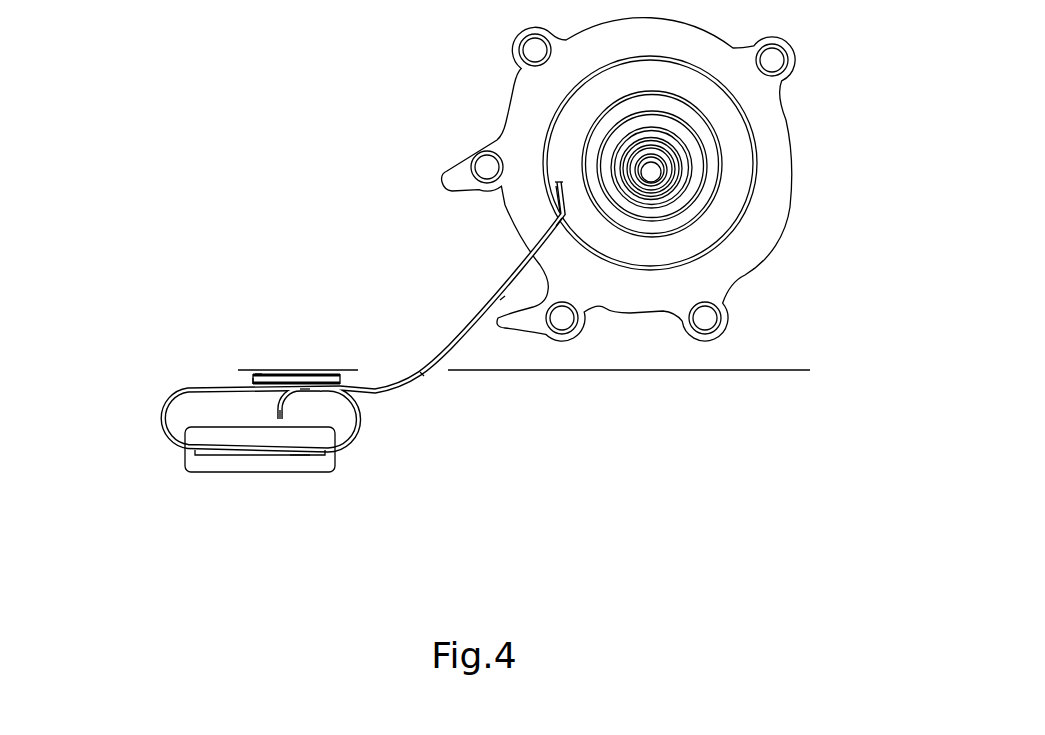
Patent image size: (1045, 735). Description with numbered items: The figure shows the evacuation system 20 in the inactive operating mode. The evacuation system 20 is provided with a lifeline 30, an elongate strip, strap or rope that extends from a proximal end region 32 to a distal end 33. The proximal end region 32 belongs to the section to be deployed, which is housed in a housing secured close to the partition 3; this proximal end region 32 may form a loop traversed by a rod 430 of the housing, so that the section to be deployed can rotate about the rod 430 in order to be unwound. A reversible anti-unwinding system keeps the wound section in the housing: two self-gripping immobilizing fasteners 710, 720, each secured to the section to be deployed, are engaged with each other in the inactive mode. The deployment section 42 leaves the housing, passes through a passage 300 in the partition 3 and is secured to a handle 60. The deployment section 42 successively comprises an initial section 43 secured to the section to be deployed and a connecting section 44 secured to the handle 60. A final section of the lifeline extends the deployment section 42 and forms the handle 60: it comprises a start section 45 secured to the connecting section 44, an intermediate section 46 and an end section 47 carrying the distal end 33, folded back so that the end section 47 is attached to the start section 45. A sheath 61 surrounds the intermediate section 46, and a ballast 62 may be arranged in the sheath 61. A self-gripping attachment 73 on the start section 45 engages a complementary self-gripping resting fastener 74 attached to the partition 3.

The partition 3 is at (783, 371).
The evacuation system 20 is at (830, 138).
The lifeline 30 is at (760, 137).
The proximal end region 32 is at (655, 173).
The distal end 33 is at (277, 418).
The deployment section 42 is at (383, 274).
The initial section 43 is at (474, 352).
The connecting section 44 is at (428, 375).
The start section 45 is at (274, 373).
The intermediate section 46 is at (218, 458).
The end section 47 is at (318, 394).
The handle 60 is at (215, 492).
The sheath 61 is at (337, 472).
The ballast 62 is at (300, 458).
The self-gripping attachment 73 is at (250, 381).
The self-gripping resting fastener 74 is at (257, 375).
The passage 300 is at (378, 356).
The rod 430 is at (668, 178).
The self-gripping immobilizing fastener 710 is at (548, 183).
The self-gripping immobilizing fastener 720 is at (570, 222).